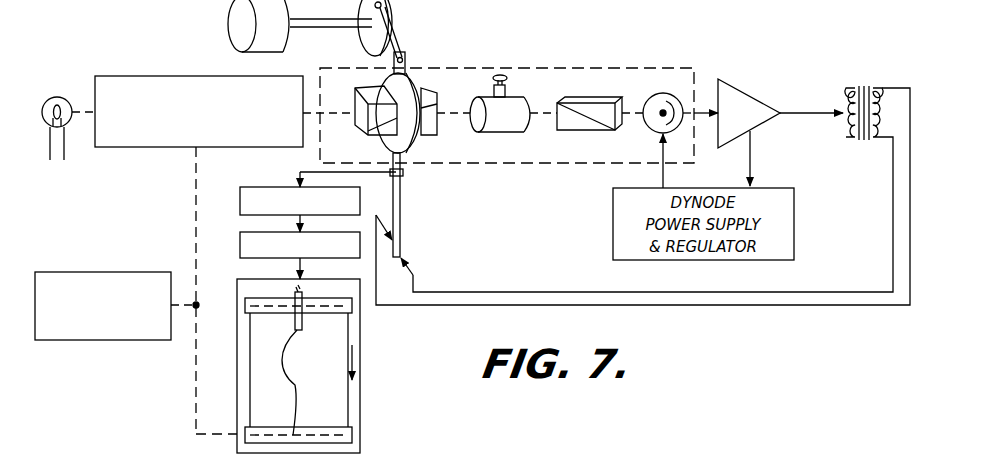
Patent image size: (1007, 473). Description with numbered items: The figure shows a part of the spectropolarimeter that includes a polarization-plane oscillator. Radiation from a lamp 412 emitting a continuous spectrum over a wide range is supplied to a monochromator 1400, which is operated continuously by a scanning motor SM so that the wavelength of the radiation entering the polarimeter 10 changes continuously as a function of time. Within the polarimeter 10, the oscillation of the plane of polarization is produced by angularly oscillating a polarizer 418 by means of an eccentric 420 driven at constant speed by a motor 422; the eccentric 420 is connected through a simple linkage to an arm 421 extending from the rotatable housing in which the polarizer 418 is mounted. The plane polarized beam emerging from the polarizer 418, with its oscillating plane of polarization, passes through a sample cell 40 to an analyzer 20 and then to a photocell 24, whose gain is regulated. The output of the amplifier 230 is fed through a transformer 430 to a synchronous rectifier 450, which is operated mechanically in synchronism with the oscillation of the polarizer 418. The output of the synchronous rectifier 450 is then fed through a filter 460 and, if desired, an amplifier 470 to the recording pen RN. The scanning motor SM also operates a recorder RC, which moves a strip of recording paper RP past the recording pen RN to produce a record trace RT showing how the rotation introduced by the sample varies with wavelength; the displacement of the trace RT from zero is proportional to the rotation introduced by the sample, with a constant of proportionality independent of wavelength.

The light source lamp 412 is at (57, 97).
The monochromator 1400 is at (206, 80).
The motor 422 is at (228, 22).
The eccentric 420 is at (393, 9).
The arm 421 is at (404, 62).
The polarimeter 10 is at (550, 68).
The polarizer 418 is at (428, 140).
The sample cell 40 is at (503, 133).
The analyzer 20 is at (586, 131).
The photocell 24 is at (656, 95).
The amplifier 230 is at (740, 92).
The transformer 430 is at (863, 86).
The synchronous rectifier 450 is at (403, 245).
The filter 460 is at (282, 187).
The amplifier 470 is at (262, 258).
The scanning motor SM is at (96, 272).
The recorder RC is at (360, 418).
The recording pen RN is at (297, 325).
The record trace RT is at (298, 387).
The recording paper RP is at (315, 362).